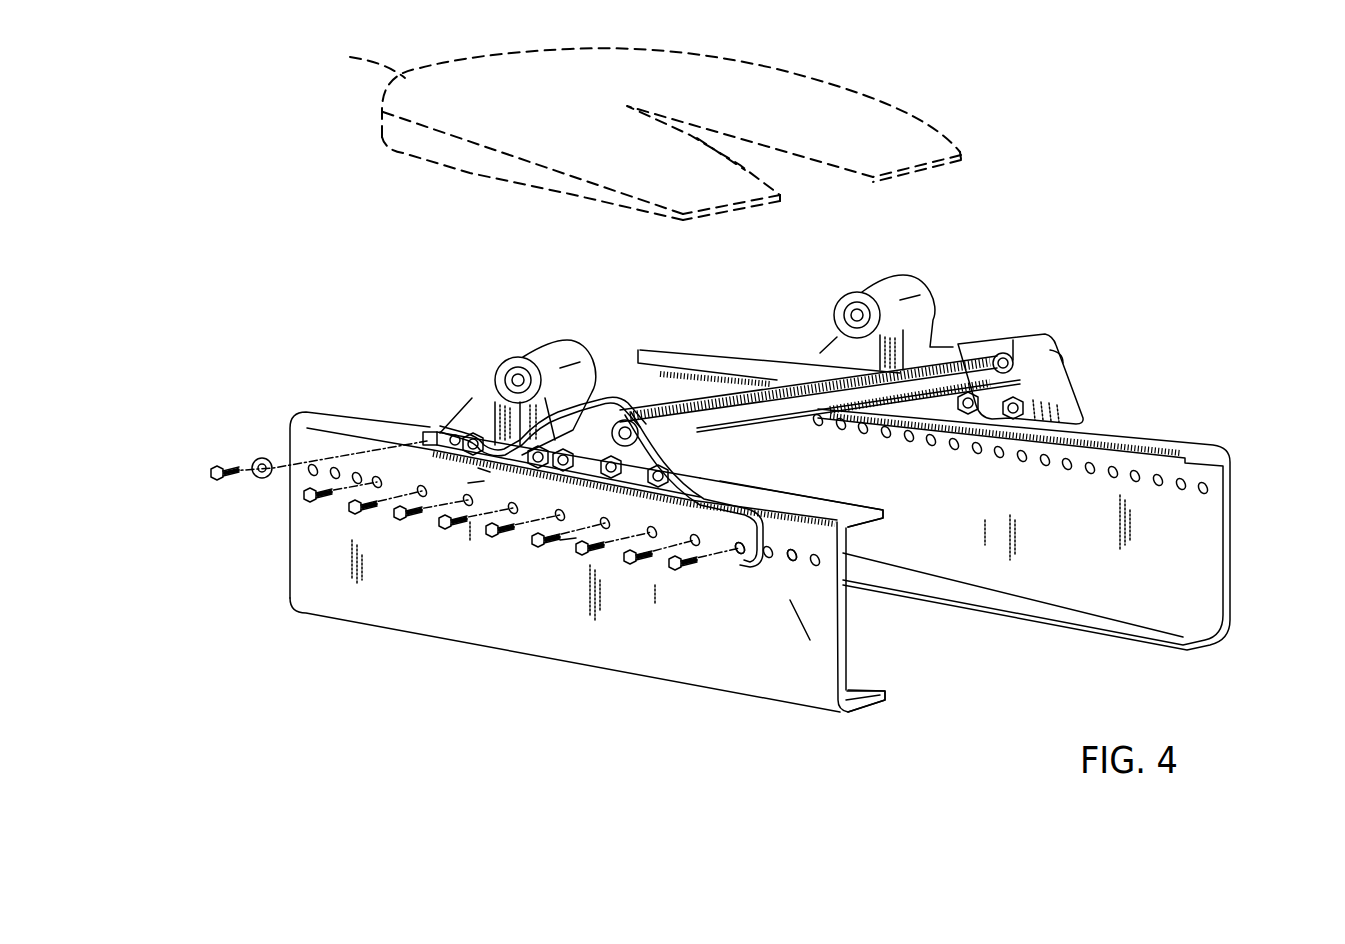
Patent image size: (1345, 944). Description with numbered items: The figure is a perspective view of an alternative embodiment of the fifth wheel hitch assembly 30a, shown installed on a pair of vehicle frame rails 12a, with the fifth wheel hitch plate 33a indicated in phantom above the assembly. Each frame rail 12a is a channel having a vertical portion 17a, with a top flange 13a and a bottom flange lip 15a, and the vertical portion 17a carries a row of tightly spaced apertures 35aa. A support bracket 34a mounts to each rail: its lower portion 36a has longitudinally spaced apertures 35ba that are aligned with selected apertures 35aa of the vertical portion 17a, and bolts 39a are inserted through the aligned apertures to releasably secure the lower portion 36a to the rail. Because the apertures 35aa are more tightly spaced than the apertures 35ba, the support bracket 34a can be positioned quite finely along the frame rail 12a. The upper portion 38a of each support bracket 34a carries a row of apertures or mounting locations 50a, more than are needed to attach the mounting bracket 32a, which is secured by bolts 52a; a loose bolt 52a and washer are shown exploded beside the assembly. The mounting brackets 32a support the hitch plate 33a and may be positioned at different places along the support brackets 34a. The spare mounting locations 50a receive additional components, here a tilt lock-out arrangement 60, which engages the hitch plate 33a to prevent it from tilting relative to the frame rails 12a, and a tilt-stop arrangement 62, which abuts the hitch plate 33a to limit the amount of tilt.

The vehicle frame rail 12a is at (1240, 550).
The top flange of rail 13a is at (855, 508).
The bottom flange lip of rail 15a is at (857, 688).
The vertical portion 17a is at (798, 638).
The fifth wheel hitch assembly 30a is at (418, 240).
The mounting bracket 32a is at (498, 356).
The fifth wheel hitch plate 33a is at (636, 134).
The support bracket 34a is at (568, 540).
The apertures of the vertical portion 35aa is at (790, 560).
The apertures of the lower portion 35ba is at (740, 556).
The lower portion 36a is at (477, 481).
The upper portion 38a is at (483, 470).
The bolts 39a is at (353, 513).
The apertures or mounting locations 50a is at (440, 433).
The bolts 52a is at (215, 470).
The tilt lock-out arrangement 60 is at (1070, 374).
The tilt-stop arrangement 62 is at (618, 402).